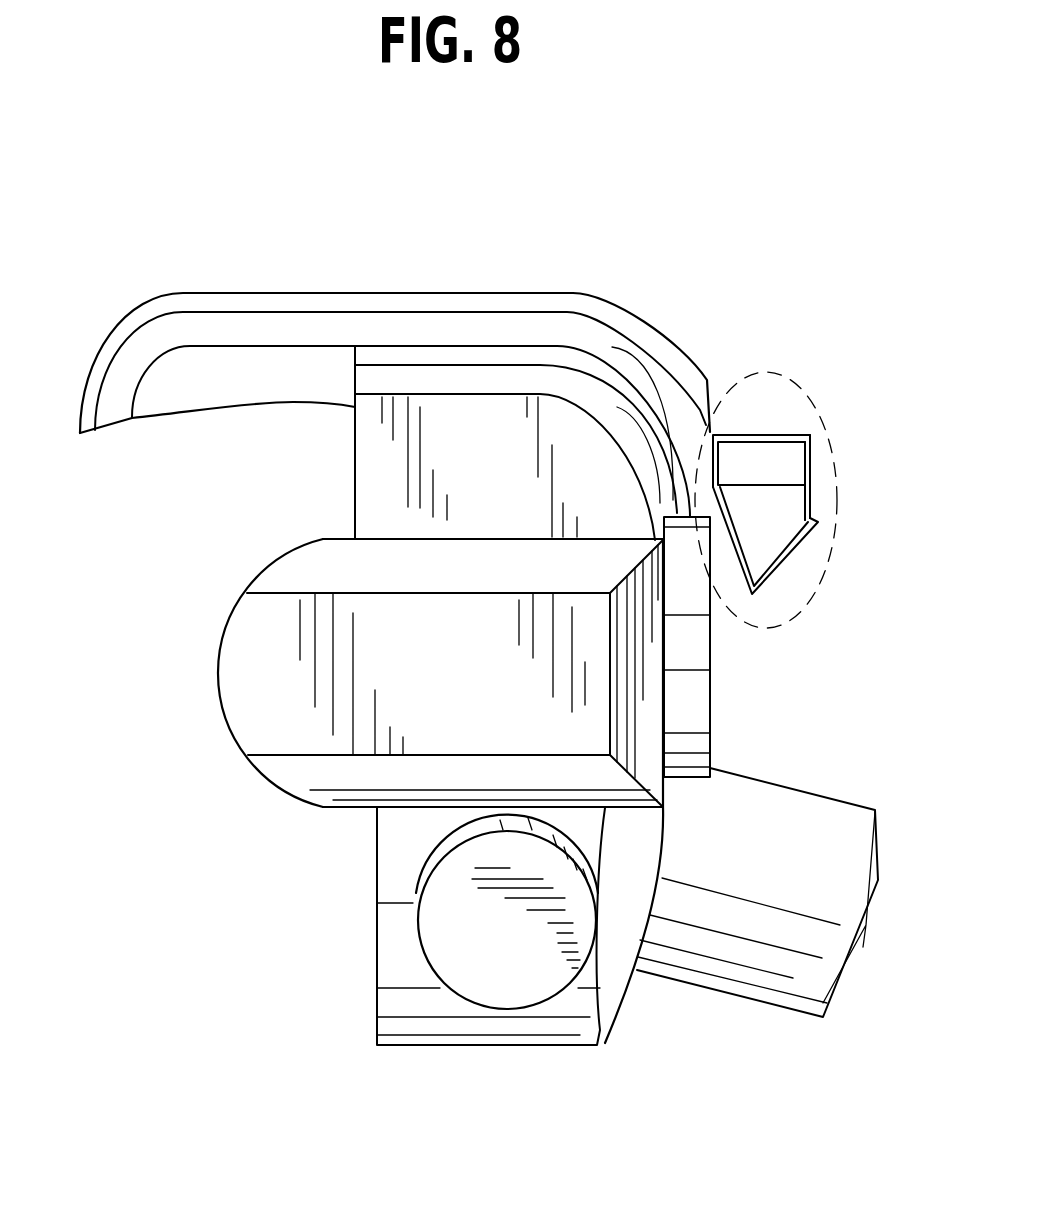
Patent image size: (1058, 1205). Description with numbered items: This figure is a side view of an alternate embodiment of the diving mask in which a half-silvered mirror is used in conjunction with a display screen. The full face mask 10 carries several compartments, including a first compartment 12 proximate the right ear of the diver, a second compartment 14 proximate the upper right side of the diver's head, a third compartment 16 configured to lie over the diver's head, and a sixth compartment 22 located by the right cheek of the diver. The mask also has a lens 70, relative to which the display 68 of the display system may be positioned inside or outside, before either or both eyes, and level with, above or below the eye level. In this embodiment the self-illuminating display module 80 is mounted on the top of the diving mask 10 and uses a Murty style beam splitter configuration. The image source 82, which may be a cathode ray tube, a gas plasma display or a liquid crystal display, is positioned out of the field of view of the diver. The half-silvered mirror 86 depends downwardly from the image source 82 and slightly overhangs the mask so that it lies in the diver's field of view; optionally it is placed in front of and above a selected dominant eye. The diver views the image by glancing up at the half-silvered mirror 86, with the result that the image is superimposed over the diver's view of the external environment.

The full face mask 10 is at (410, 228).
The first compartment 12 is at (383, 705).
The second compartment 14 is at (450, 488).
The third compartment 16 is at (480, 327).
The sixth compartment 22 is at (457, 938).
The display 68 is at (800, 390).
The lens 70 is at (693, 688).
The self-illuminating display module 80 is at (795, 455).
The image source 82 is at (813, 473).
The half-silvered mirror 86 is at (797, 555).